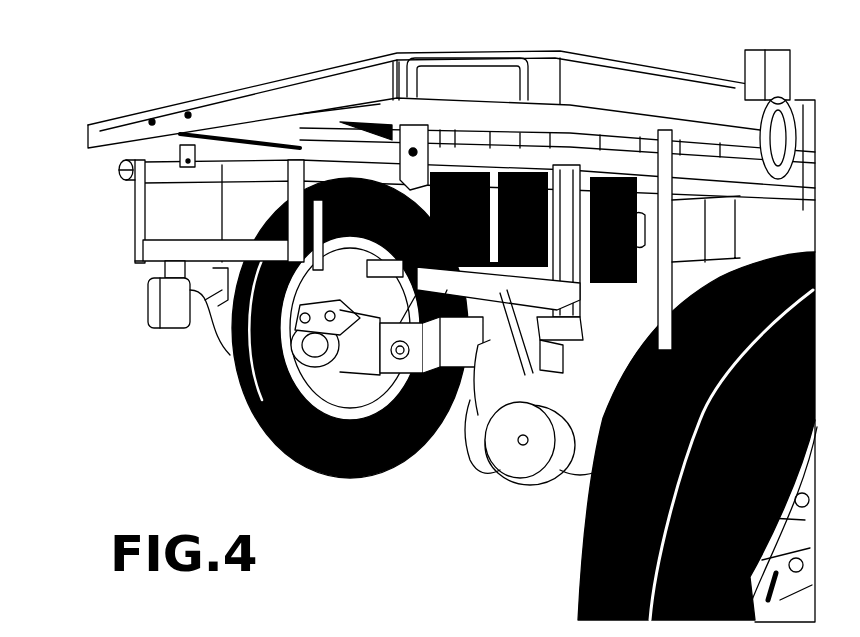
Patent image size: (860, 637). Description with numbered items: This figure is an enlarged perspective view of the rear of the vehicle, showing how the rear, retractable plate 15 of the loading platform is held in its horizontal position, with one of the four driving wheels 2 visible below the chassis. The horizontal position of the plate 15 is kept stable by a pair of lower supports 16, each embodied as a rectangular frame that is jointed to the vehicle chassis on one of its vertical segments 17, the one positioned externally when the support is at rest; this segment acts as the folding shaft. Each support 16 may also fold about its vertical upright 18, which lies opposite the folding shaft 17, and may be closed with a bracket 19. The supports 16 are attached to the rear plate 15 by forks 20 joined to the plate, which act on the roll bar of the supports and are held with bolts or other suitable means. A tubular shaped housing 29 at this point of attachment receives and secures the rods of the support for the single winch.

The driving wheel 2 is at (580, 560).
The rear plate 15 is at (604, 75).
The lower support 16 is at (160, 250).
The vertical segment 17 is at (298, 188).
The vertical upright 18 is at (380, 137).
The bracket 19 is at (118, 171).
The fork 20 is at (413, 143).
The tubular shaped housing 29 is at (782, 98).